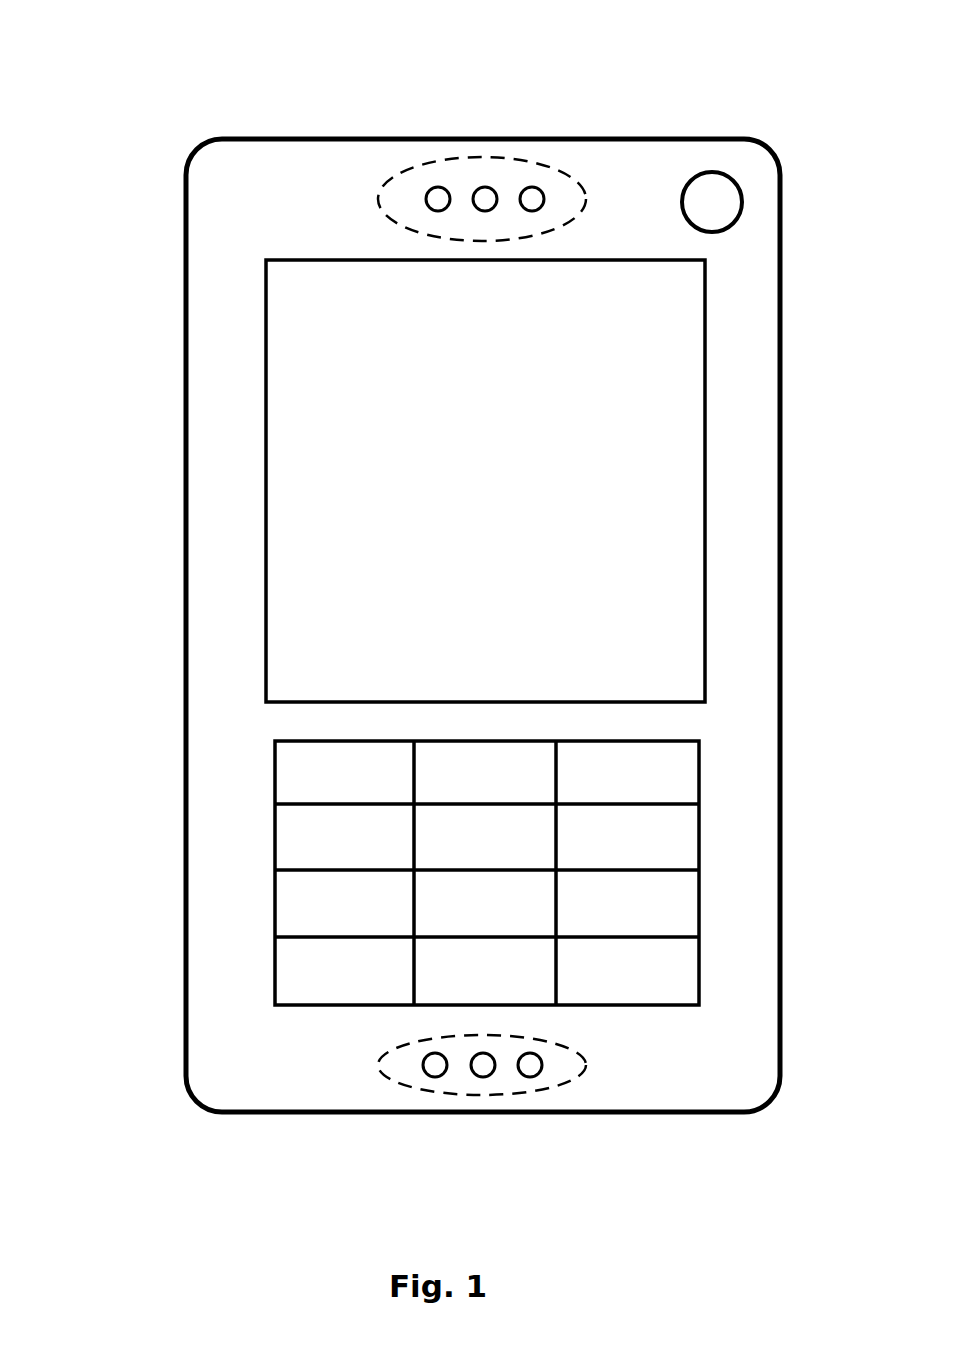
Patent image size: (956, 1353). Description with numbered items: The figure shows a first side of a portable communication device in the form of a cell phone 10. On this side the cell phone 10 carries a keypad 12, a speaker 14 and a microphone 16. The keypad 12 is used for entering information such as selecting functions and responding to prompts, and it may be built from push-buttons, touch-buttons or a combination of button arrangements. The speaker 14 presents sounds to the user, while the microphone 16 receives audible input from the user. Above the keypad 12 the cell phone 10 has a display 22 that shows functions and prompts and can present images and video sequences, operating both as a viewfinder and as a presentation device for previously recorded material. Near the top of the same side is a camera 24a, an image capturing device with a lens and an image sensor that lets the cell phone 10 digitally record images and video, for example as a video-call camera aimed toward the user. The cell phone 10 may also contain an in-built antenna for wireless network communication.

The cell phone 10 is at (262, 105).
The keypad 12 is at (293, 760).
The speaker 14 is at (509, 170).
The microphone 16 is at (458, 1078).
The display 22 is at (507, 493).
The camera 24a is at (697, 190).